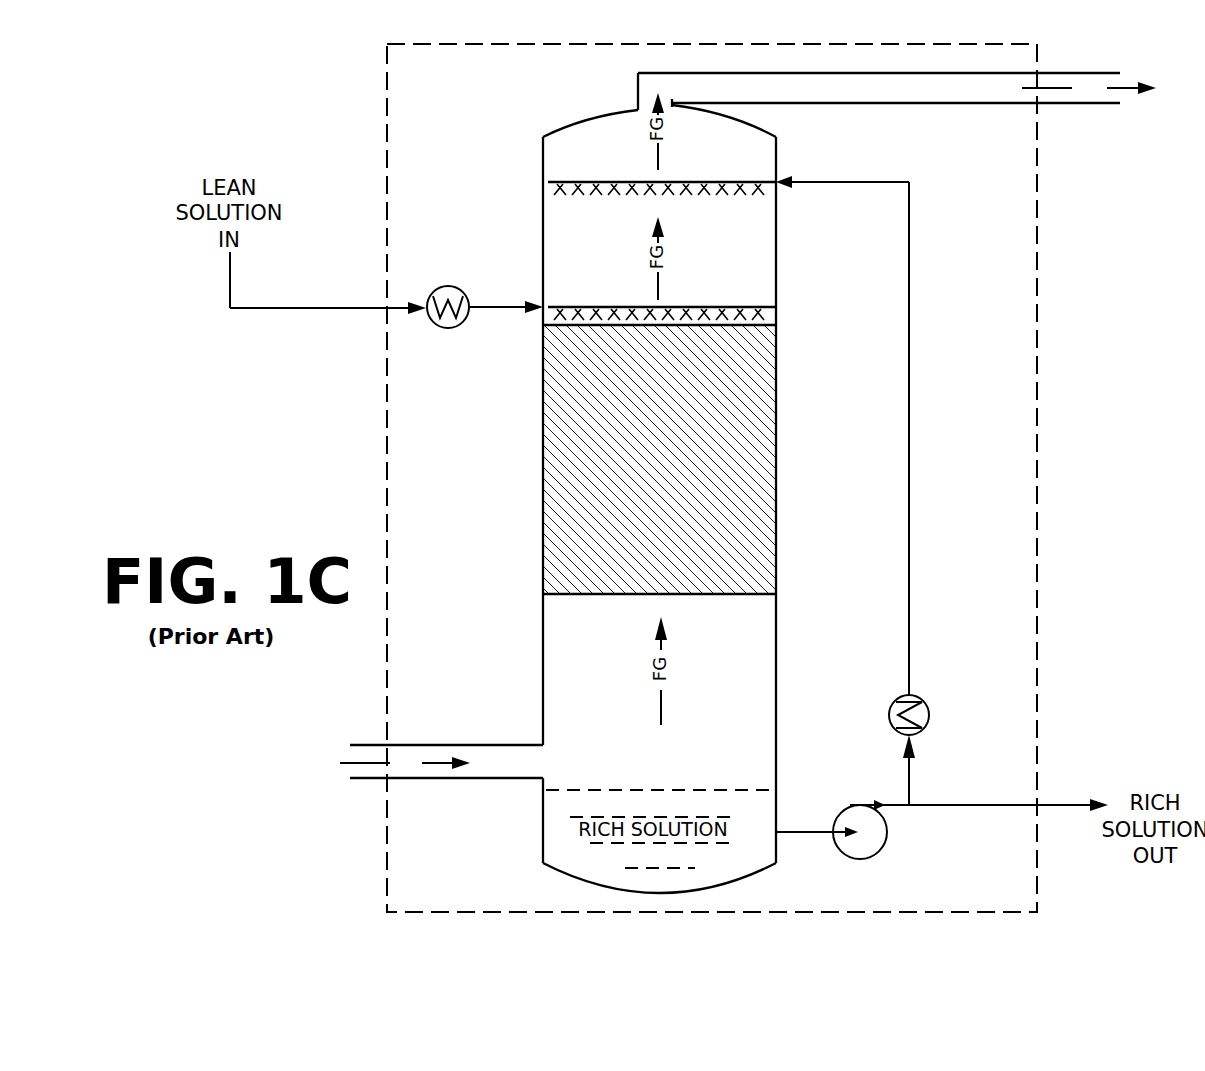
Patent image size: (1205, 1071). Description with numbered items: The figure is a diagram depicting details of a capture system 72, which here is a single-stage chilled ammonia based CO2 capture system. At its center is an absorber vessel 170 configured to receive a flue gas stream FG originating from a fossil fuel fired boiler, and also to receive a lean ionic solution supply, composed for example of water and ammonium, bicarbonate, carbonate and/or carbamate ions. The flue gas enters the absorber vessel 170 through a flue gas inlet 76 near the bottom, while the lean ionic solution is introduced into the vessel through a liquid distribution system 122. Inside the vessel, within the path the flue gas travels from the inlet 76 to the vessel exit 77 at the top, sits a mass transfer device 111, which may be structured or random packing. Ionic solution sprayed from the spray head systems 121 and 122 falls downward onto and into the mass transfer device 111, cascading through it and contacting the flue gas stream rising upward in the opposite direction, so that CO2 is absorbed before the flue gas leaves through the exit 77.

The capture system 72 is at (418, 74).
The absorber vessel 170 is at (530, 147).
The spray head system 121 is at (558, 198).
The liquid distribution system 122 is at (549, 312).
The mass transfer device 111 is at (560, 498).
The flue gas inlet 76 is at (369, 738).
The vessel exit 77 is at (1099, 120).